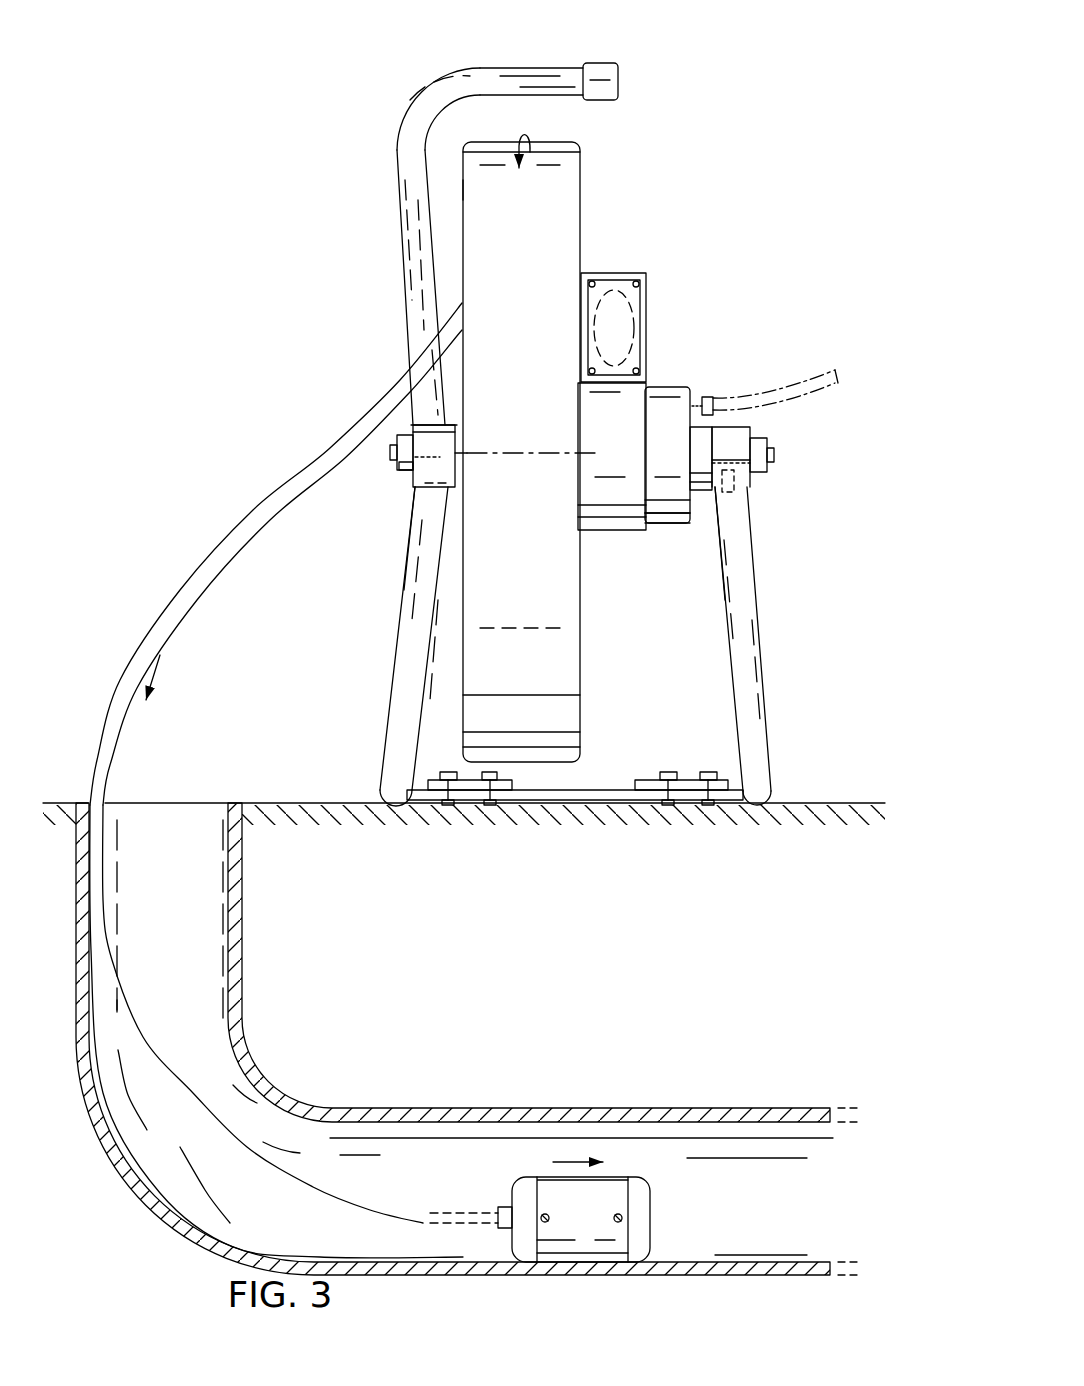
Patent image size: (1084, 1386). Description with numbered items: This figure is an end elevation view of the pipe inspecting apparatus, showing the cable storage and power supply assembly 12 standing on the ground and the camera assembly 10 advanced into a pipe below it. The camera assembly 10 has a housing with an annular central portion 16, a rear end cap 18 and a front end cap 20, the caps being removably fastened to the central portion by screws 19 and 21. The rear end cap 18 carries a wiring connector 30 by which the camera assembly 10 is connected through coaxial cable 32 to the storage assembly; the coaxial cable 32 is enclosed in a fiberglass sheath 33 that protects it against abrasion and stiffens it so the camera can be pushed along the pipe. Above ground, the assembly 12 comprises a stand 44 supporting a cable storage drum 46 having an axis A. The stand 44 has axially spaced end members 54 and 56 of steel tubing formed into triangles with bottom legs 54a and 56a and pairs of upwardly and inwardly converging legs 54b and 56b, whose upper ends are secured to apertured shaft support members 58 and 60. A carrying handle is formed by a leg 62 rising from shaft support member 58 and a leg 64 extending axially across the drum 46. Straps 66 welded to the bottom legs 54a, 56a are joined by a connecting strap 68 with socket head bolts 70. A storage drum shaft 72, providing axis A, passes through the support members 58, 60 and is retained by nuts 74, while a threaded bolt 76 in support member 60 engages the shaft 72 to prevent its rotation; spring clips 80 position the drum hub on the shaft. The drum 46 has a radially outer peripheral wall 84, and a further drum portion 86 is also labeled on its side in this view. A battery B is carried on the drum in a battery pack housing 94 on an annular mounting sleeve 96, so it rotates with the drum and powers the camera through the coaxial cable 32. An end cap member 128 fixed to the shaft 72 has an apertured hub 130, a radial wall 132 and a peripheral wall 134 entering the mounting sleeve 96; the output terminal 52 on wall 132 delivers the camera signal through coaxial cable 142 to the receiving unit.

The camera assembly 10 is at (638, 1165).
The cable storage and power supply assembly 12 is at (640, 250).
The annular central portion 16 is at (597, 1253).
The rear end cap 18 is at (594, 1217).
The screws 19 is at (545, 1225).
The annular front end cap 20 is at (650, 1205).
The screws 21 is at (622, 1221).
The wiring connector 30 is at (510, 1232).
The coaxial cable 32 is at (456, 1210).
The fiberglass sheath 33 is at (253, 508).
The stand 44 is at (395, 640).
The cable storage drum 46 is at (499, 390).
The output terminal 52 is at (707, 397).
The end member 54 is at (373, 646).
The bottom leg 54a is at (382, 790).
The legs 54b is at (410, 587).
The end member 56 is at (795, 646).
The bottom leg 56a is at (775, 792).
The legs 56b is at (740, 603).
The shaft support member 58 is at (418, 425).
The shaft support member 60 is at (742, 433).
The leg 62 is at (413, 255).
The leg 64 is at (537, 76).
The straps 66 is at (473, 792).
The connecting strap 68 is at (582, 790).
The socket head bolts 70 is at (490, 772).
The storage drum shaft 72 is at (392, 455).
The nuts 74 is at (403, 472).
The threaded bolt 76 is at (725, 498).
The spring clips 80 is at (462, 451).
The radially outer peripheral wall 84 is at (498, 140).
The drum side 86 is at (462, 190).
The battery pack housing 94 is at (613, 273).
The annular mounting sleeve 96 is at (607, 532).
The end cap member 128 is at (672, 525).
The apertured hub 130 is at (703, 443).
The wall 132 is at (690, 513).
The radially outer peripheral wall 134 is at (668, 388).
The coaxial cable 142 is at (813, 399).
The axis A is at (520, 457).
The battery B is at (623, 322).